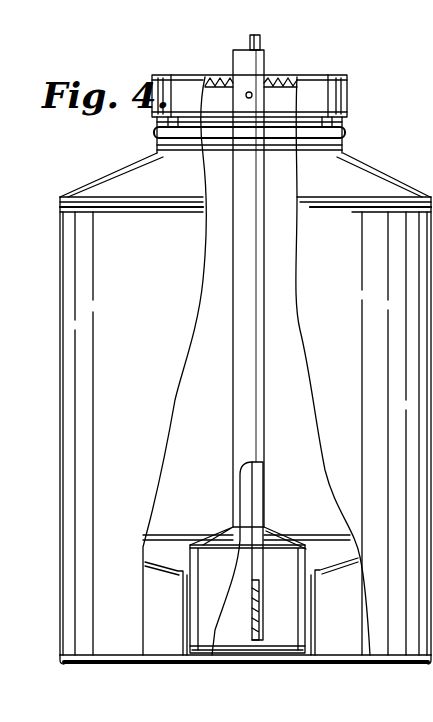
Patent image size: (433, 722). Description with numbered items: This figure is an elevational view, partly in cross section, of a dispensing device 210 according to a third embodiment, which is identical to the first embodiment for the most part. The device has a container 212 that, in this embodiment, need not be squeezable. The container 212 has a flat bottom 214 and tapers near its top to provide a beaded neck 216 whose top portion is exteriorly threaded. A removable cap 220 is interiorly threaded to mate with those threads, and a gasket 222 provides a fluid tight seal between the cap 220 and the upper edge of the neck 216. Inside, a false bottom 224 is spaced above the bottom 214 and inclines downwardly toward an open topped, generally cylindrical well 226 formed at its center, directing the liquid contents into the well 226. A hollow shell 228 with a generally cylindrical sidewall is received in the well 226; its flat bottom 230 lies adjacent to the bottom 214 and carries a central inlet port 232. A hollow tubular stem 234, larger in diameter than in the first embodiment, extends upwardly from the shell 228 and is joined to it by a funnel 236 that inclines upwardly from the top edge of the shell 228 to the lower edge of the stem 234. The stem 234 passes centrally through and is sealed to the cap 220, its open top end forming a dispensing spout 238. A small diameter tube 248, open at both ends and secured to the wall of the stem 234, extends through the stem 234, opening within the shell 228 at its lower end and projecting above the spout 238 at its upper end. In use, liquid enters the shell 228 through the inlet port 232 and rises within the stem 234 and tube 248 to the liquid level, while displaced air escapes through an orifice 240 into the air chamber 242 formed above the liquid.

The dispensing device 210 is at (87, 167).
The container 212 is at (75, 352).
The bottom 214 is at (78, 664).
The neck 216 is at (334, 122).
The cap 220 is at (338, 93).
The gasket 222 is at (222, 75).
The false bottom 224 is at (147, 561).
The well 226 is at (320, 606).
The shell 228 is at (211, 560).
The flat bottom 230 is at (300, 648).
The inlet port 232 is at (253, 636).
The stem 234 is at (238, 399).
The funnel 236 is at (284, 534).
The spout 238 is at (243, 44).
The orifice 240 is at (250, 91).
The air chamber 242 is at (232, 182).
The tube 248 is at (260, 490).